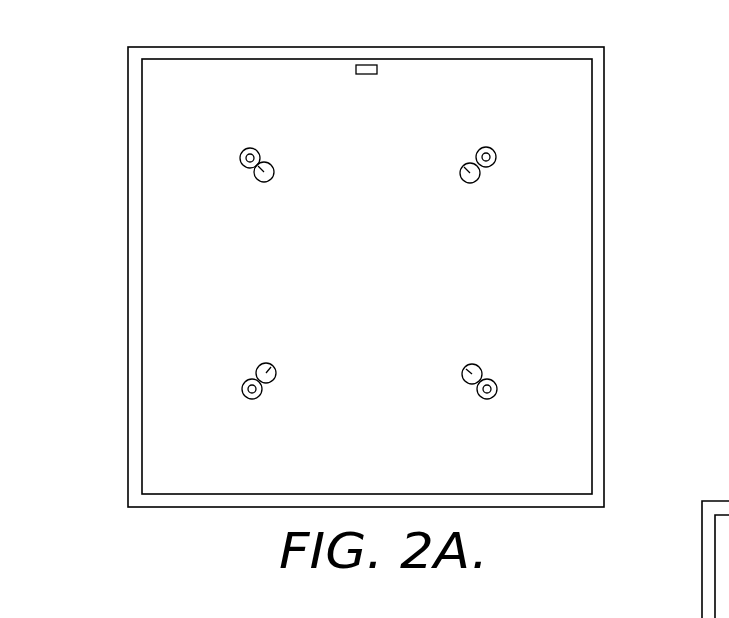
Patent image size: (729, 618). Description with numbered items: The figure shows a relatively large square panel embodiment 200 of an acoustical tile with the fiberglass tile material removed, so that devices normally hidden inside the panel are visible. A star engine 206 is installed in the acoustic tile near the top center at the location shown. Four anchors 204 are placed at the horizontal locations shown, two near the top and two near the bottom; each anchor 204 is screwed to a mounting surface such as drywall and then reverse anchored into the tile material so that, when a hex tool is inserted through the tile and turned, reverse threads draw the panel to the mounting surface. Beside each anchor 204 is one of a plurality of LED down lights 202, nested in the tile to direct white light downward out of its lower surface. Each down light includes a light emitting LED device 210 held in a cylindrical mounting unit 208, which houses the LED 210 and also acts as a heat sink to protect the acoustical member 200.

The square panel embodiment 200 is at (615, 242).
The LED down light 202 is at (272, 132).
The anchor 204 is at (277, 173).
The star engine 206 is at (365, 75).
The cylindrical mounting unit 208 is at (494, 148).
The light emitting LED device 210 is at (496, 165).